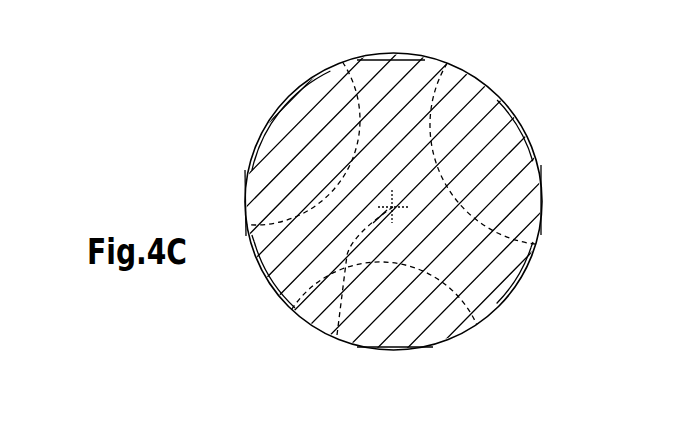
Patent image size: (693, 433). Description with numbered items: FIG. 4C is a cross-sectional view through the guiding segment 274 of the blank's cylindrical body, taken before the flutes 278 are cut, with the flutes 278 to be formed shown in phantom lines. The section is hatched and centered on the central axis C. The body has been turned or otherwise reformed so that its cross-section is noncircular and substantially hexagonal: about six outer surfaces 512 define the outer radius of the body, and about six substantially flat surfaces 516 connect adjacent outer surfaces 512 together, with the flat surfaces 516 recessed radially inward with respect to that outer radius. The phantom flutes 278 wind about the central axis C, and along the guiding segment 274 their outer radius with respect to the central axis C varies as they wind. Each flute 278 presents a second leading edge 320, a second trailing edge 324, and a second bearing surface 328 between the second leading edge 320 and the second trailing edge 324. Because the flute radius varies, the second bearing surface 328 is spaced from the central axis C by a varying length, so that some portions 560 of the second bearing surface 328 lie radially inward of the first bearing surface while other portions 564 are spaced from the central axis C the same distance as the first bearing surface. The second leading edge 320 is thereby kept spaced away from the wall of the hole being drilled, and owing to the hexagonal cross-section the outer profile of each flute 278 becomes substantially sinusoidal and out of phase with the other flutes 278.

The guiding segment 274 is at (243, 132).
The flutes 278 is at (384, 100).
The portions of the second bearing surface 564 is at (442, 66).
The outer surfaces 512 is at (477, 78).
The flat surfaces 516 is at (523, 128).
The second leading edge 320 is at (545, 214).
The second bearing surface 328 is at (267, 298).
The second trailing edge 324 is at (480, 325).
The portions of the second bearing surface 560 is at (262, 272).
The central axis C is at (337, 335).